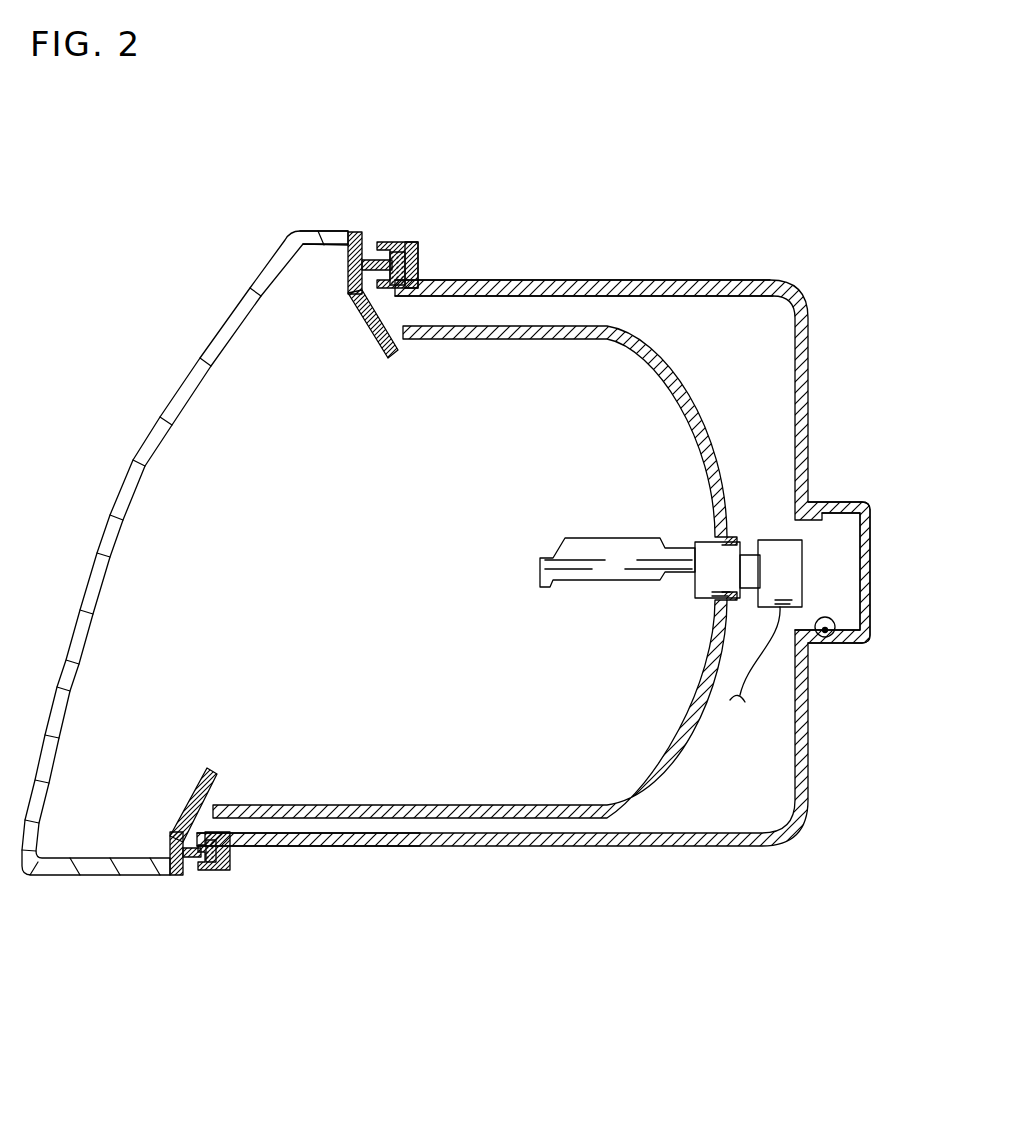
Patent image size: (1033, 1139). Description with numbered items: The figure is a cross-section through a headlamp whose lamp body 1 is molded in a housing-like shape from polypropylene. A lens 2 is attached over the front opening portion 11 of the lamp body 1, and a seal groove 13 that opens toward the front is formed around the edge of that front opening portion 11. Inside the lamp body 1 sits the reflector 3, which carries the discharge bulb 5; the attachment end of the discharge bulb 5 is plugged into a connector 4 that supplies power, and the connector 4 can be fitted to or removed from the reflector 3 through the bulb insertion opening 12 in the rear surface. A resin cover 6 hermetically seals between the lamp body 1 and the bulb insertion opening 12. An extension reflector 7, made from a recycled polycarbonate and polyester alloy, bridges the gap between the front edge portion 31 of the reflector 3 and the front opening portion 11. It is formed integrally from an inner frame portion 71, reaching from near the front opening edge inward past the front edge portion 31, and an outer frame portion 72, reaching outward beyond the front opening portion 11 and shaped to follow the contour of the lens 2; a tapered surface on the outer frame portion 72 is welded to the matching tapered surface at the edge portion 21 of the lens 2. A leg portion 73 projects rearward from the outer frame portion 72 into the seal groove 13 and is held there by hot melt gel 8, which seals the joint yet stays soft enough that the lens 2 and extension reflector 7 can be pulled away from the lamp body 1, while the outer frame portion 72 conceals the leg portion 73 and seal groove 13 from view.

The lamp body 1 is at (551, 585).
The front opening portion 11 is at (220, 826).
The bulb insertion opening 12 is at (832, 630).
The seal groove 13 is at (210, 873).
The lens 2 is at (185, 526).
The edge portion 21 is at (300, 234).
The reflector 3 is at (602, 292).
The front edge portion 31 is at (438, 322).
The connector 4 is at (797, 565).
The discharge bulb 5 is at (625, 568).
The cover 6 is at (876, 598).
The extension reflector 7 is at (242, 595).
The inner frame portion 71 is at (372, 332).
The outer frame portion 72 is at (346, 266).
The leg portion 73 is at (453, 229).
The hot melt gel 8 is at (418, 248).